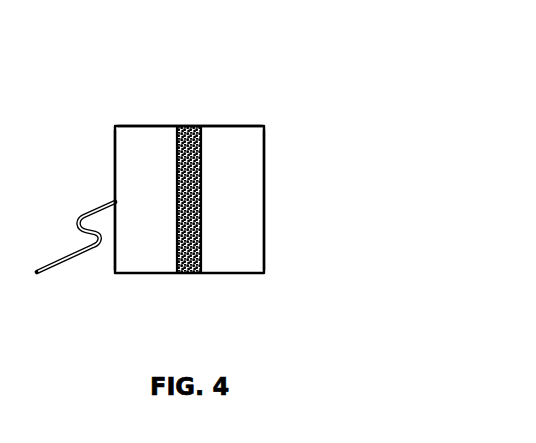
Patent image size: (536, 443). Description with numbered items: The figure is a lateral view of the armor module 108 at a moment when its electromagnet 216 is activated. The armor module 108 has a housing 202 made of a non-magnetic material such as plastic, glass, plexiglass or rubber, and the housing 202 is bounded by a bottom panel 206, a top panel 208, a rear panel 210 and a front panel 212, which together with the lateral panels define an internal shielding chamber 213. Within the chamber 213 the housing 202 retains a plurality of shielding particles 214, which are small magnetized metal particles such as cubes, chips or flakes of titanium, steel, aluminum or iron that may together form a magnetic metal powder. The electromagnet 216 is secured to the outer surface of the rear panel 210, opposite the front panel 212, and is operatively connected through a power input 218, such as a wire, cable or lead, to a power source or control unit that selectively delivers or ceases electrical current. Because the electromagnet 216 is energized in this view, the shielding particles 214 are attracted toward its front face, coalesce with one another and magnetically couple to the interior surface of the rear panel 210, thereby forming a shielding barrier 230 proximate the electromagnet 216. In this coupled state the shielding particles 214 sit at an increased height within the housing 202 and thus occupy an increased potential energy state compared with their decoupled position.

The armor module 108 is at (168, 88).
The housing 202 is at (266, 178).
The bottom panel 206 is at (195, 225).
The top panel 208 is at (229, 126).
The rear panel 210 is at (177, 224).
The front panel 212 is at (264, 237).
The internal shielding chamber 213 is at (244, 252).
The shielding particles 214 is at (187, 267).
The electromagnet 216 is at (115, 157).
The power input 218 is at (58, 264).
The shielding barrier 230 is at (195, 171).